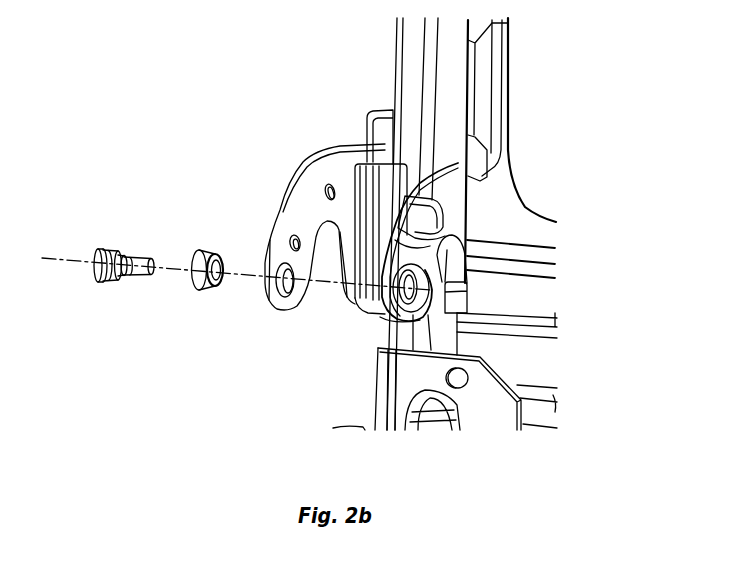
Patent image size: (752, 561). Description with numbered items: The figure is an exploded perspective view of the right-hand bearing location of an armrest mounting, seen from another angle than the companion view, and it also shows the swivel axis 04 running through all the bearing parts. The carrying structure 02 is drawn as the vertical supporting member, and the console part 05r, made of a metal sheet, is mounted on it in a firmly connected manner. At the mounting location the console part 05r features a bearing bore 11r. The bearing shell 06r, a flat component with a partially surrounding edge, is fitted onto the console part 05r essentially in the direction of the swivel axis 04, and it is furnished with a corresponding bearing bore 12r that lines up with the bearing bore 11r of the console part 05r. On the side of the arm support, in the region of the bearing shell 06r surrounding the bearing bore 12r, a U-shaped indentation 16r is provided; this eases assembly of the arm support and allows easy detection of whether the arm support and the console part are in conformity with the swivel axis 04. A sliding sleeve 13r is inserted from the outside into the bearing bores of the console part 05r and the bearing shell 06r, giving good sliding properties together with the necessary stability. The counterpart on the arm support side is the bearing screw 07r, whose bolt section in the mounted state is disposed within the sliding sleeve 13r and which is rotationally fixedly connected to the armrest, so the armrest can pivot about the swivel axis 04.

The carrying structure 02 is at (405, 72).
The swivel axis 04 is at (175, 272).
The console part 05r is at (255, 225).
The bearing shell 06r is at (455, 196).
The bearing screw 07r is at (121, 252).
The bearing bore 11r is at (273, 288).
The bearing bore 12r is at (385, 330).
The sliding sleeve 13r is at (217, 263).
The U-shaped indentation 16r is at (368, 300).